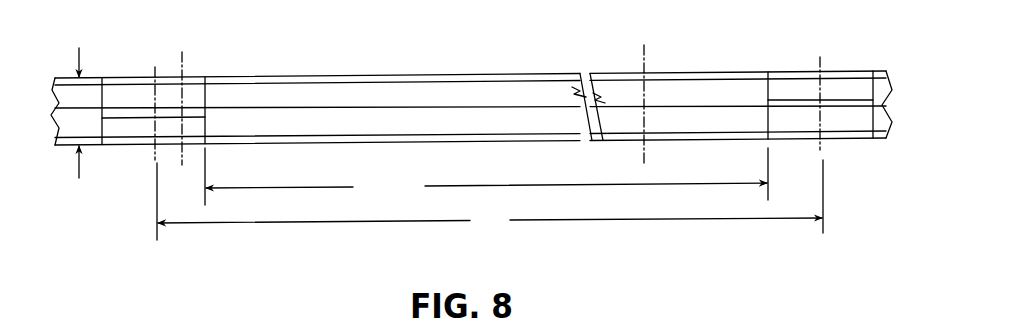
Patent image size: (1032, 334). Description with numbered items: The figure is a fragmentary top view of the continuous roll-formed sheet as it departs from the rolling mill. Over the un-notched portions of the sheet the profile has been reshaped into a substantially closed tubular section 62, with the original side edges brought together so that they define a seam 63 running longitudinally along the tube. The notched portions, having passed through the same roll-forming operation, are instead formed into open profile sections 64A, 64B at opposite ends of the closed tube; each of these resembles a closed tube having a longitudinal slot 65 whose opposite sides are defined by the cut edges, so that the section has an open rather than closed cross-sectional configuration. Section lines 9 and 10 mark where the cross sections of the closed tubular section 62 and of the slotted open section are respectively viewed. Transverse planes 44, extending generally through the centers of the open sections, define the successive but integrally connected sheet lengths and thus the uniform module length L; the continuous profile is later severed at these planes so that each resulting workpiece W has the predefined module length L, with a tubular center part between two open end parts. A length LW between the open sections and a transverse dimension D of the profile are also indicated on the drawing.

The closed tubular cross section 62 is at (365, 72).
The seam 63 is at (310, 108).
The open profile section 64A is at (112, 77).
The open profile section 64B is at (190, 76).
The transverse plane 44 is at (153, 77).
The slot 65 is at (166, 117).
The section line 10 is at (182, 52).
The section line 9 is at (644, 45).
The workpiece W is at (606, 70).
The rod diameter D is at (85, 134).
The weld length LW is at (486, 179).
The module length L is at (490, 203).